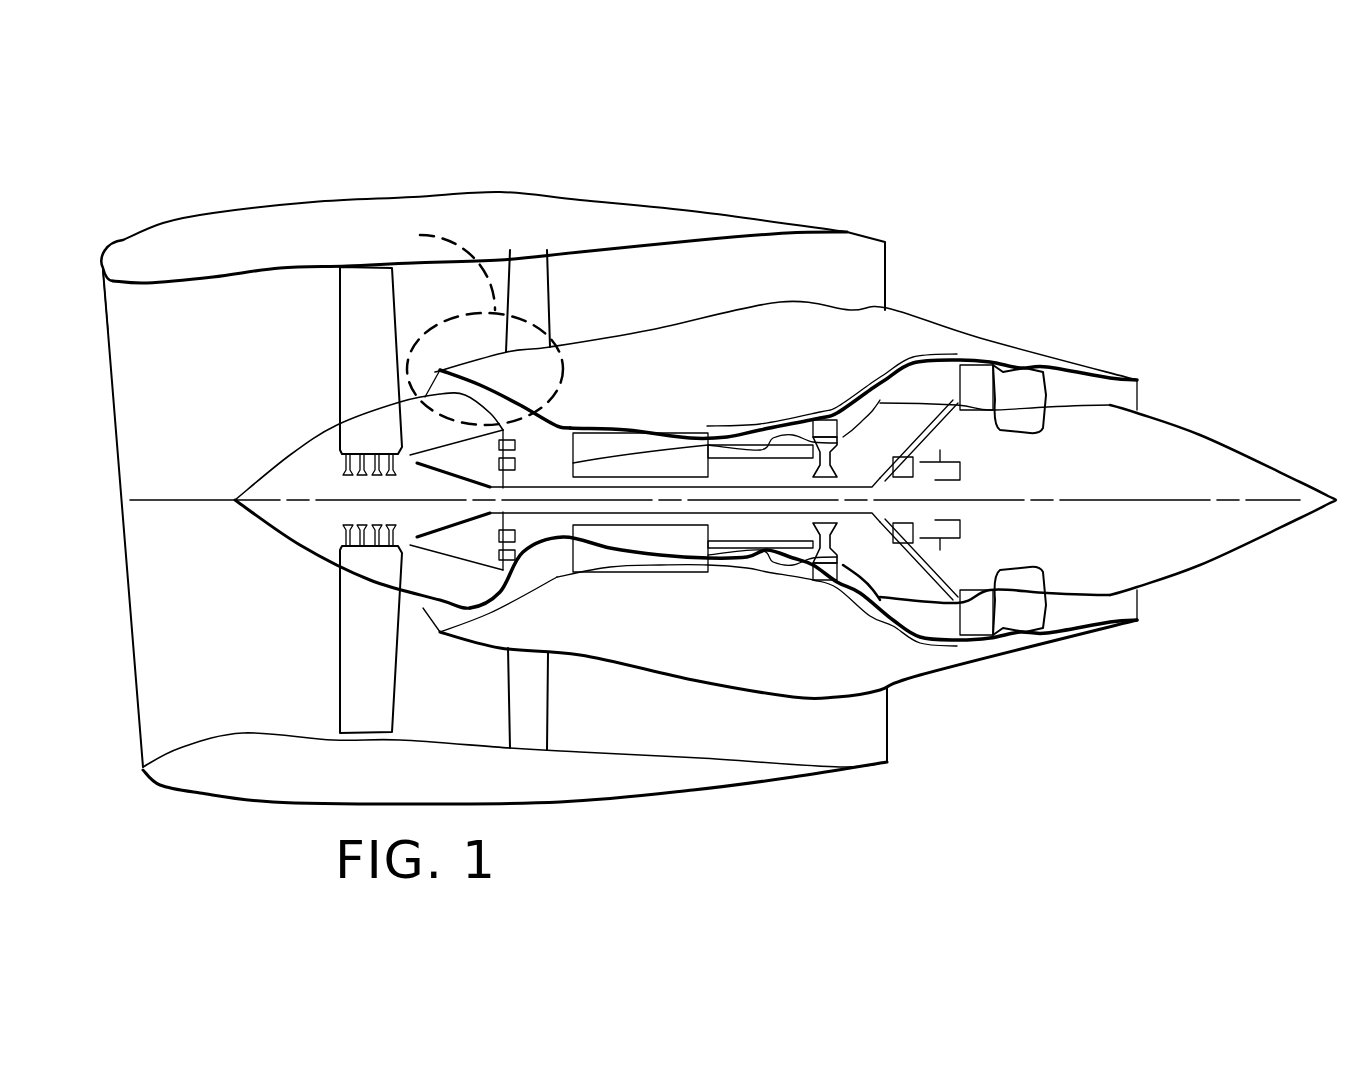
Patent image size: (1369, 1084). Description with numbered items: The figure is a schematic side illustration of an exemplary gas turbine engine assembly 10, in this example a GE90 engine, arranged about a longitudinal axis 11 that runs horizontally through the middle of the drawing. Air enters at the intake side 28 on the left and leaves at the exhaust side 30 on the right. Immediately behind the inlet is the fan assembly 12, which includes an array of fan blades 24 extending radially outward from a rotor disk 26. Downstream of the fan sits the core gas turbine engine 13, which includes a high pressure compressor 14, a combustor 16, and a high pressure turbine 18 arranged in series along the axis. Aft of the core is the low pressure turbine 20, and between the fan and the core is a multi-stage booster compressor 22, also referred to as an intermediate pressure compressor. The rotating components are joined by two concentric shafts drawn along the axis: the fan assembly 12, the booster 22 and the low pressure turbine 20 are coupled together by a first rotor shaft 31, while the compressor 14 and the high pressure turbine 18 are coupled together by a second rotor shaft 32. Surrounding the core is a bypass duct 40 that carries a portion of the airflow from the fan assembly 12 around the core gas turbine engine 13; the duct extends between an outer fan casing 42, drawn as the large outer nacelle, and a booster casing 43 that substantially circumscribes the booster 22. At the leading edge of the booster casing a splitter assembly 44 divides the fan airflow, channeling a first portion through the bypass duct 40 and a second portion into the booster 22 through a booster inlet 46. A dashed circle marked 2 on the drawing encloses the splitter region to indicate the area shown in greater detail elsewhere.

The gas turbine engine assembly 10 is at (835, 148).
The longitudinal axis 11 is at (160, 503).
The fan assembly 12 is at (368, 645).
The core gas turbine engine 13 is at (690, 418).
The high pressure compressor 14 is at (595, 435).
The combustor 16 is at (778, 432).
The high pressure turbine 18 is at (822, 580).
The low pressure turbine 20 is at (920, 378).
The multi-stage booster compressor 22 is at (500, 377).
The fan blades 24 is at (362, 340).
The rotor disk 26 is at (367, 572).
The intake side 28 is at (83, 303).
The exhaust side 30 is at (935, 257).
The first rotor shaft 31 is at (607, 565).
The second rotor shaft 32 is at (650, 557).
The bypass duct 40 is at (692, 308).
The outer fan casing 42 is at (623, 202).
The booster casing 43 is at (573, 345).
The splitter assembly 44 is at (425, 396).
The booster inlet 46 is at (428, 633).
The detail view region of FIG. 2 is at (478, 320).